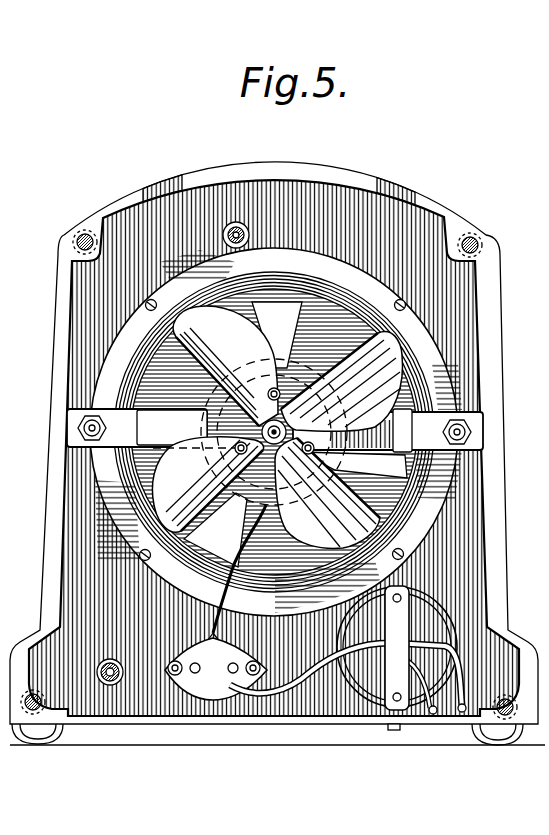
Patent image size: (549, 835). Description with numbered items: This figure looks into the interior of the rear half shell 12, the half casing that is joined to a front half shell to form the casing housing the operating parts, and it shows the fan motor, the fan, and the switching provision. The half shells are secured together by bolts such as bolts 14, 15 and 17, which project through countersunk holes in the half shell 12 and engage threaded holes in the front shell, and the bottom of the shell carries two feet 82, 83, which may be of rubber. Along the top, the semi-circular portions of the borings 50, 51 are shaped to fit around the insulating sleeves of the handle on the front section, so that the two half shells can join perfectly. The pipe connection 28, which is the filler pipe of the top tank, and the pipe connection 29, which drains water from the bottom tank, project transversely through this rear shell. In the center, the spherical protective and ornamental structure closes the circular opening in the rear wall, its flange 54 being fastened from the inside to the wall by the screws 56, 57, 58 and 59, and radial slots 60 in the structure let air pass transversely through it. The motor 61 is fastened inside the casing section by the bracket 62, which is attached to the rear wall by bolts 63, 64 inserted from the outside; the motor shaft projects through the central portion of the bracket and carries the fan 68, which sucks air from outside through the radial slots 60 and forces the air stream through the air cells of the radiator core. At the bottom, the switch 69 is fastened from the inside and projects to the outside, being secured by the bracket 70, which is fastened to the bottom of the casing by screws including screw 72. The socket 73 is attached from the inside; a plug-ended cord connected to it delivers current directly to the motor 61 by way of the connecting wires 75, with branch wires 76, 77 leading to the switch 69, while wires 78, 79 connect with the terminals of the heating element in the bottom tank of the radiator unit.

The half shell 12 is at (492, 356).
The bolt 14 is at (482, 247).
The bolt 15 is at (81, 232).
The bolt 17 is at (35, 716).
The pipe connection 28 is at (240, 222).
The pipe connection 29 is at (110, 688).
The semi-circular portion of boring 50 is at (172, 182).
The semi-circular portion of boring 51 is at (399, 186).
The flange 54 is at (373, 278).
The screw 56 is at (149, 311).
The screw 57 is at (404, 311).
The screw 58 is at (165, 516).
The screw 59 is at (394, 557).
The radial slot 60 is at (284, 334).
The motor 61 is at (320, 372).
The bracket 62 is at (462, 409).
The bolt 63 is at (68, 424).
The bolt 64 is at (432, 427).
The fan 68 is at (205, 350).
The switch 69 is at (440, 622).
The bracket 70 is at (392, 684).
The screw 72 is at (393, 732).
The socket 73 is at (188, 682).
The connecting wires 75 is at (224, 592).
The branch wire 76 is at (368, 652).
The branch wire 77 is at (367, 652).
The wire 78 is at (432, 716).
The wire 79 is at (461, 714).
The foot 82 is at (50, 742).
The foot 83 is at (500, 742).